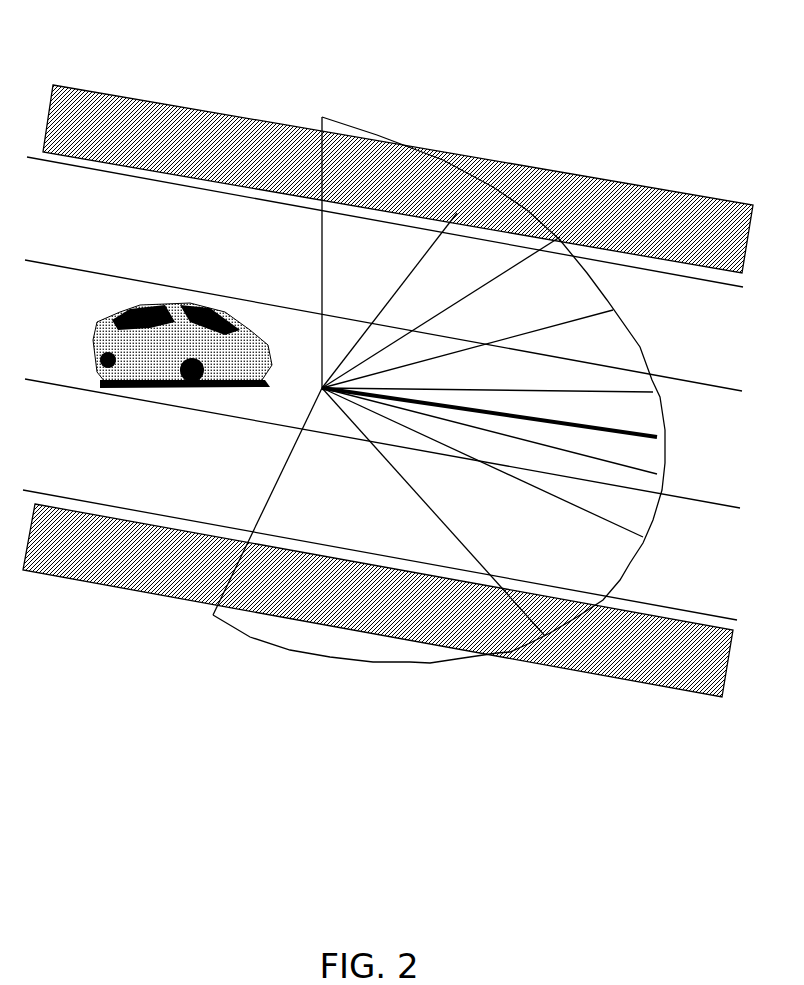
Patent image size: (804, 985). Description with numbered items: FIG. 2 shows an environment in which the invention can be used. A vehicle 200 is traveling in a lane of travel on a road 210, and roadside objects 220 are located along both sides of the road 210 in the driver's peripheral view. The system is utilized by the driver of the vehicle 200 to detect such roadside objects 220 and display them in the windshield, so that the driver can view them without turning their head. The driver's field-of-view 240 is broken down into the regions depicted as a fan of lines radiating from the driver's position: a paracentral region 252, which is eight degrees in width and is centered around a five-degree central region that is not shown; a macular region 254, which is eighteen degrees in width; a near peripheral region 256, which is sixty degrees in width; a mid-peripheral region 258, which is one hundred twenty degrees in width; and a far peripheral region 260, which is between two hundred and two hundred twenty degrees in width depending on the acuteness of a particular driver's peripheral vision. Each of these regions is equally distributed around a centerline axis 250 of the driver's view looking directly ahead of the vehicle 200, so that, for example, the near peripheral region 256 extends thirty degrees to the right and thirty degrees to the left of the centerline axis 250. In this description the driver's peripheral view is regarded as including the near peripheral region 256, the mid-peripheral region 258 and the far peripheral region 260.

The vehicle 200 is at (243, 323).
The road 210 is at (377, 388).
The roadside objects 220 is at (163, 102).
The driver's field-of-view 240 is at (372, 665).
The centerline axis 250 is at (653, 438).
The paracentral region 252 is at (632, 418).
The macular region 254 is at (613, 342).
The near peripheral region 256 is at (567, 295).
The mid-peripheral region 258 is at (487, 260).
The far peripheral region 260 is at (388, 247).